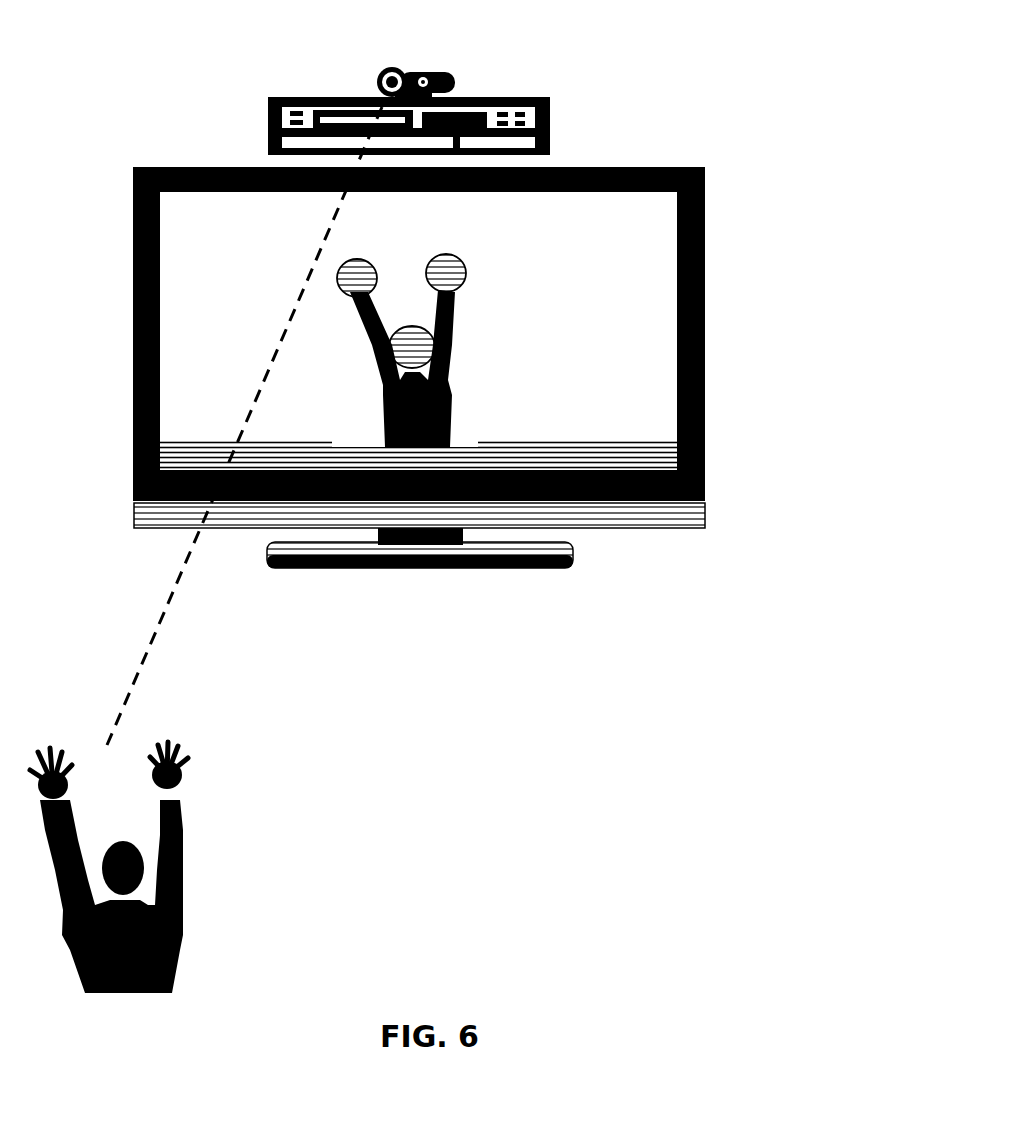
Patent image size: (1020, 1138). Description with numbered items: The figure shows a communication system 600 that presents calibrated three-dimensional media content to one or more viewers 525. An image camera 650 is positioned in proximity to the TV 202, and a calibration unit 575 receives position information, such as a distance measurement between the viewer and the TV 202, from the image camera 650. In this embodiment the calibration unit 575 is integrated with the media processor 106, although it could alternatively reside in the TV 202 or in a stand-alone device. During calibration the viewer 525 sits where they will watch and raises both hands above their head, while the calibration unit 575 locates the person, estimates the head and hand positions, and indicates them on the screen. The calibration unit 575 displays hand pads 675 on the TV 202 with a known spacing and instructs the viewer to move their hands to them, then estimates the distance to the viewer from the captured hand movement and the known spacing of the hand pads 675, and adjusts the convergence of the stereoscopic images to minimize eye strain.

The media processor 106 is at (550, 113).
The calibration unit 575 is at (470, 95).
The image camera 650 is at (392, 88).
The TV 202 is at (698, 238).
The hand pads 675 is at (457, 278).
The viewers 525 is at (183, 857).
The communication system 600 is at (426, 514).